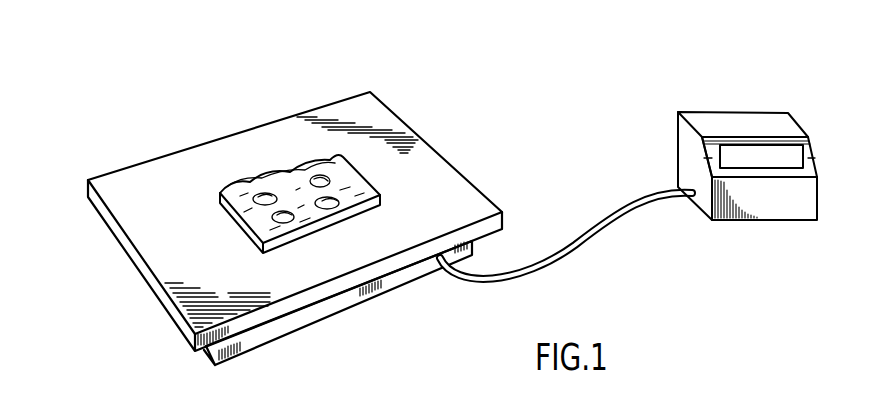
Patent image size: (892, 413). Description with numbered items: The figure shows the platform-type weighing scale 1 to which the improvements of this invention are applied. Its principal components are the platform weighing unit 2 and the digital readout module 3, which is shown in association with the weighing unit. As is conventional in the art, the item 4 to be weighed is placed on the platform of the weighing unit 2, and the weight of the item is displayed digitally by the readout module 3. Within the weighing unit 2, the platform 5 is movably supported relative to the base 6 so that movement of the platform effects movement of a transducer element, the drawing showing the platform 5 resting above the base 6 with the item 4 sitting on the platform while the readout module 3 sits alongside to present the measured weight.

The platform-type weighing scale 1 is at (568, 178).
The platform weighing unit 2 is at (343, 116).
The digital readout module 3 is at (743, 123).
The item 4 is at (348, 182).
The platform 5 is at (113, 232).
The base 6 is at (290, 323).